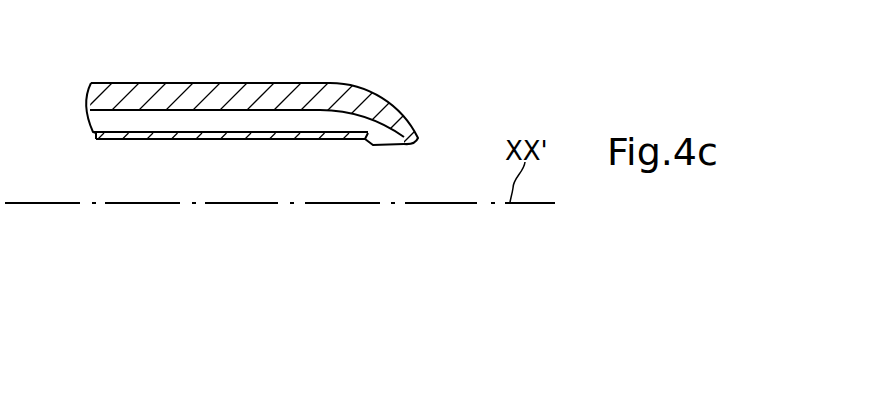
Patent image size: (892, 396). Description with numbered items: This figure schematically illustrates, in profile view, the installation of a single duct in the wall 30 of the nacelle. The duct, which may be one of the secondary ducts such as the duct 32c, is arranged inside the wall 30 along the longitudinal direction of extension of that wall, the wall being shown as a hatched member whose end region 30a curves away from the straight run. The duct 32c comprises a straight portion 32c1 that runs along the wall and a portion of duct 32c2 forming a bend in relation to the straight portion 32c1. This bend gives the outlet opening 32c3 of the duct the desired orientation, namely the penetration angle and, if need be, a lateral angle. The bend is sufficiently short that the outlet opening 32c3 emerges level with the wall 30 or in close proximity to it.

The wall 30 is at (267, 83).
The curved tip of upper member 30a is at (401, 110).
The duct 32c is at (272, 168).
The straight portion 32c1 is at (245, 133).
The portion of duct forming a bend 32c2 is at (355, 142).
The outlet opening 32c3 is at (389, 145).